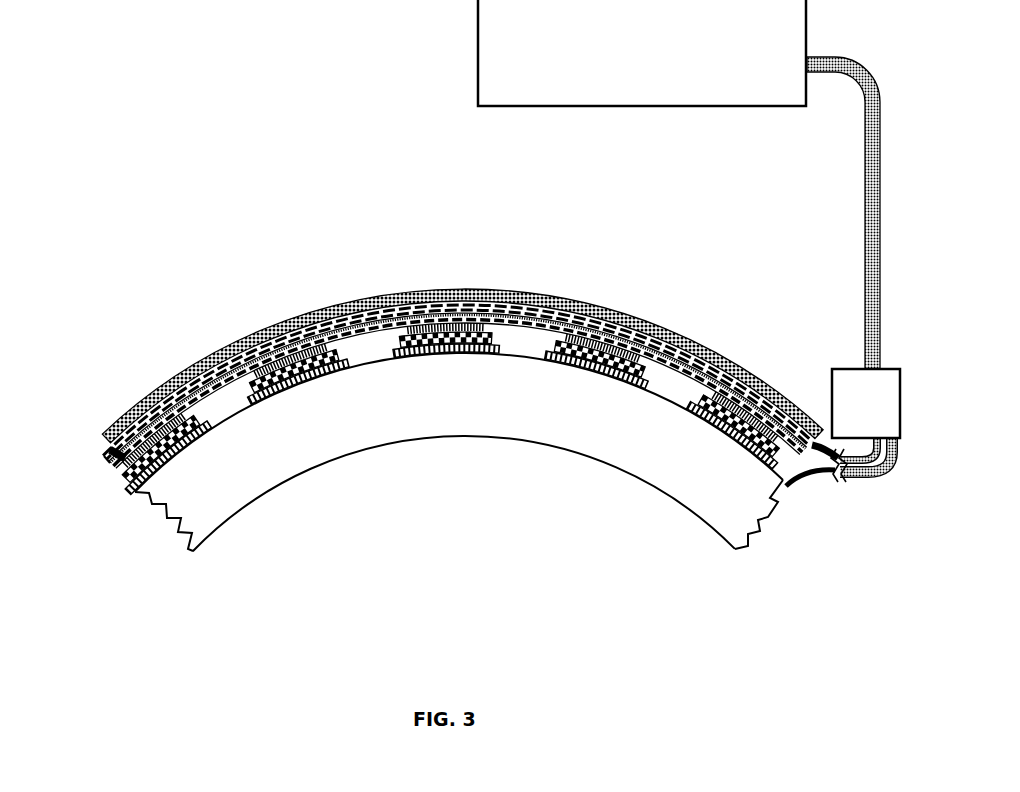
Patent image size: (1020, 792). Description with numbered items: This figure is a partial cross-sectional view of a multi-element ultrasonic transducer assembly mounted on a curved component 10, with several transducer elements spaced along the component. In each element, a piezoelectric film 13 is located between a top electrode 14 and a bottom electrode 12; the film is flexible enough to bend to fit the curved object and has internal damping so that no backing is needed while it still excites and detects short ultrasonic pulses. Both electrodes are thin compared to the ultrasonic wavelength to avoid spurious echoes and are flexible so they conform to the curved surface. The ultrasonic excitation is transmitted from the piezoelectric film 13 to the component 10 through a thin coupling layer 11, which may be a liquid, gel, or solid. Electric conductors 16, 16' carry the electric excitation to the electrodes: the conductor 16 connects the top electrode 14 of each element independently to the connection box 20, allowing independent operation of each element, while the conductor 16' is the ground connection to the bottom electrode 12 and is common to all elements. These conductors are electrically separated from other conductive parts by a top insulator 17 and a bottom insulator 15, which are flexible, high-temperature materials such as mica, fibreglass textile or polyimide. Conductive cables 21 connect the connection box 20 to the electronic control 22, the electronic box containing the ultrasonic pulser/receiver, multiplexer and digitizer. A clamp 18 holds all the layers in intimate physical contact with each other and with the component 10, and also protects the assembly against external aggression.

The component 10 is at (247, 503).
The coupling layer 11 is at (500, 349).
The bottom electrode 12 is at (643, 378).
The piezoelectric film 13 is at (397, 338).
The top electrode 14 is at (387, 296).
The bottom insulator 15 is at (104, 458).
The electric conductor 16 is at (501, 384).
The electric conductor 16' is at (812, 513).
The top insulator 17 is at (118, 451).
The clamp 18 is at (108, 430).
The connection box 20 is at (866, 403).
The conductive cables 21 is at (863, 237).
The electronic control 22 is at (640, 107).